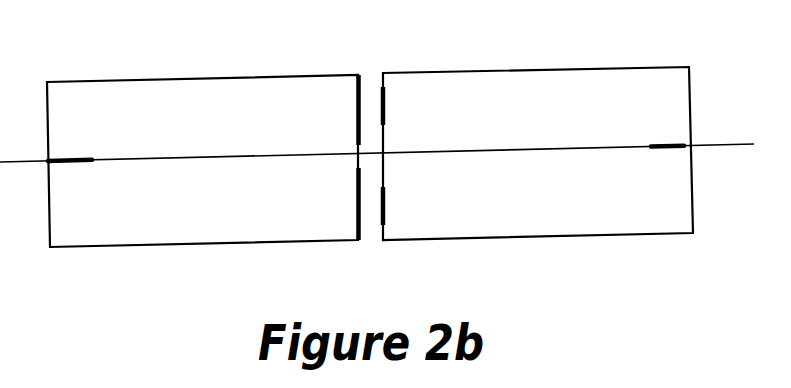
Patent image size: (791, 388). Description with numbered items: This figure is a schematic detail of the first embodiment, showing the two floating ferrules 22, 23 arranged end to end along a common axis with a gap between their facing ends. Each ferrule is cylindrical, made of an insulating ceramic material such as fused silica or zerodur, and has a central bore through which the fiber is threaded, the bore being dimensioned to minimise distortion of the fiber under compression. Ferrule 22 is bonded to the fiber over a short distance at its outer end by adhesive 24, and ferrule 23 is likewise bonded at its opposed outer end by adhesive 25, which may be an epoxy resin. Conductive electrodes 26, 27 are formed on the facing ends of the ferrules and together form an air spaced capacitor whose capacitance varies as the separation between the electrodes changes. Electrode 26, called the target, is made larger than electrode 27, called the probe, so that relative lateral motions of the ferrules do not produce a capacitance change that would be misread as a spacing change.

The floating ferrule 22 is at (175, 78).
The floating ferrule 23 is at (551, 67).
The adhesive 24 is at (68, 160).
The adhesive 25 is at (668, 147).
The conductive electrode 26 is at (355, 100).
The conductive electrode 27 is at (385, 103).